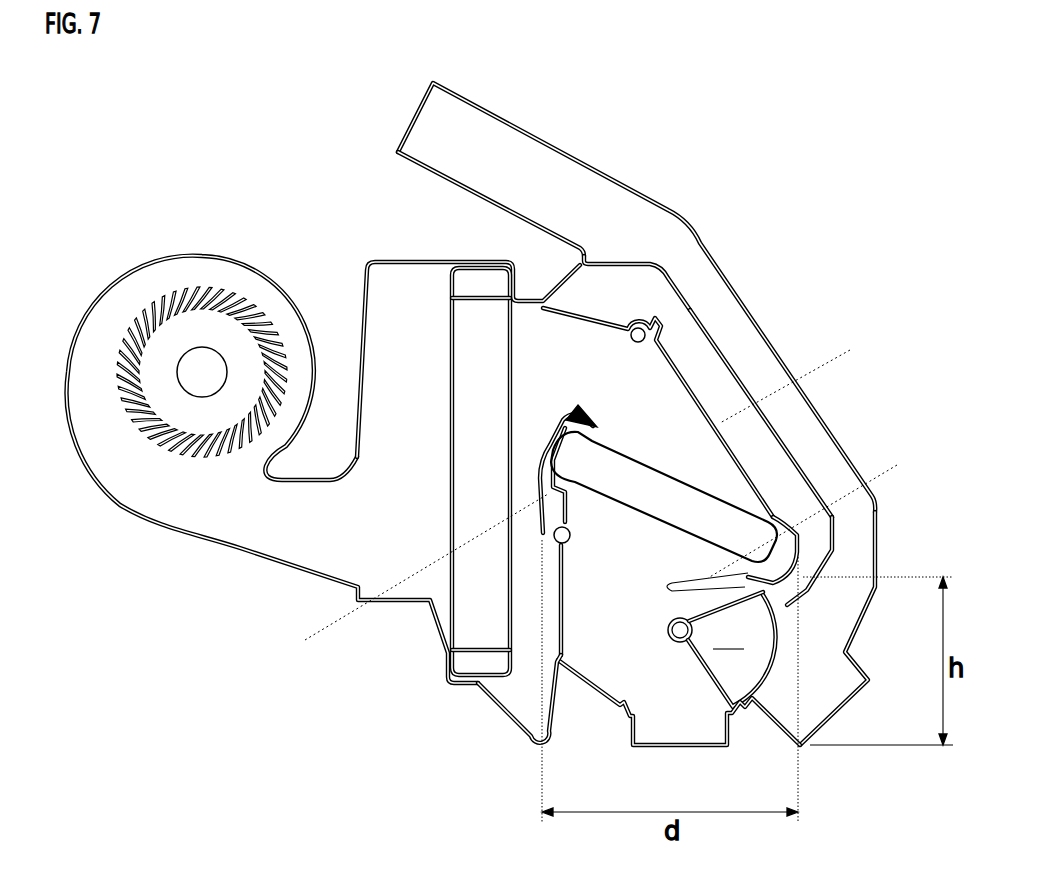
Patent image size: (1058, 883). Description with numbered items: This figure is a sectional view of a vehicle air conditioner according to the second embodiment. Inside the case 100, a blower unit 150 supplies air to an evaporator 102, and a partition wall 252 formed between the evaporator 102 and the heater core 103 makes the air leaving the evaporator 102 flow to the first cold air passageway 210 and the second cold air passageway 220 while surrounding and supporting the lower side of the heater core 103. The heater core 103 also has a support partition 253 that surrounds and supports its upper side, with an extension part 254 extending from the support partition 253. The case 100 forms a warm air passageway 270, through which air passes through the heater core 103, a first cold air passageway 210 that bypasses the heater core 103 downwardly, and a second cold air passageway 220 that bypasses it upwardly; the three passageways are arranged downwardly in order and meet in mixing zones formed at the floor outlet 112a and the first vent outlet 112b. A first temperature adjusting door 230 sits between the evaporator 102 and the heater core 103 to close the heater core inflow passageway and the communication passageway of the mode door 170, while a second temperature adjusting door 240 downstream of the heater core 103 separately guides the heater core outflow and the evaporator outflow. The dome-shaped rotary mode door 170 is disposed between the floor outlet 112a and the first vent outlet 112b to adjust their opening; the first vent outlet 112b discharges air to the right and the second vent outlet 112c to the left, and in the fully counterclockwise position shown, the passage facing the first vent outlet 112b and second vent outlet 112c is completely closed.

The case 100 is at (257, 556).
The blower unit 150 is at (163, 447).
The evaporator 102 is at (467, 628).
The heater core 103 is at (640, 477).
The floor outlet 112a is at (668, 727).
The first vent outlet 112b is at (830, 695).
The second vent outlet 112c is at (428, 121).
The mode door 170 is at (760, 658).
The first cold air passageway 210 is at (615, 598).
The second cold air passageway 220 is at (595, 302).
The first temperature adjusting door 230 is at (590, 337).
The second temperature adjusting door 240 is at (590, 603).
The partition wall 252 is at (405, 576).
The support partition 253 is at (808, 379).
The extension part 254 is at (824, 516).
The warm air passageway 270 is at (700, 464).